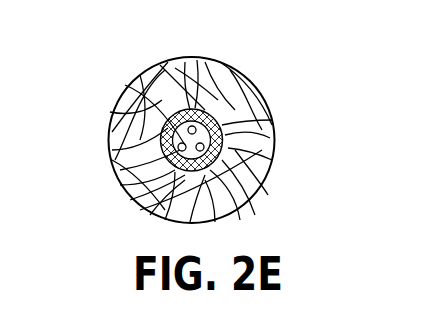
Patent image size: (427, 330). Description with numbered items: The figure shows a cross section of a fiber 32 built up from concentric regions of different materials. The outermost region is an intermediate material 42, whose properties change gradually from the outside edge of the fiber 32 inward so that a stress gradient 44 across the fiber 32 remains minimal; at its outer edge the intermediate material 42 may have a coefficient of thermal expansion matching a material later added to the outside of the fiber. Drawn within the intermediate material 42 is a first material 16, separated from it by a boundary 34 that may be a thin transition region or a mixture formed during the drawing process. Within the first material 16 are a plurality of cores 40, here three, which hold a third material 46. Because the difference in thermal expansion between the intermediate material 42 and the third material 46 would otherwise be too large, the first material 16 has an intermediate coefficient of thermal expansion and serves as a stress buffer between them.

The fiber 32 is at (104, 81).
The core 40 is at (188, 112).
The intermediate material 42 is at (198, 75).
The stress gradient 44 is at (250, 143).
The third material 46 is at (176, 152).
The first material 16 is at (226, 132).
The boundary 34 is at (222, 160).